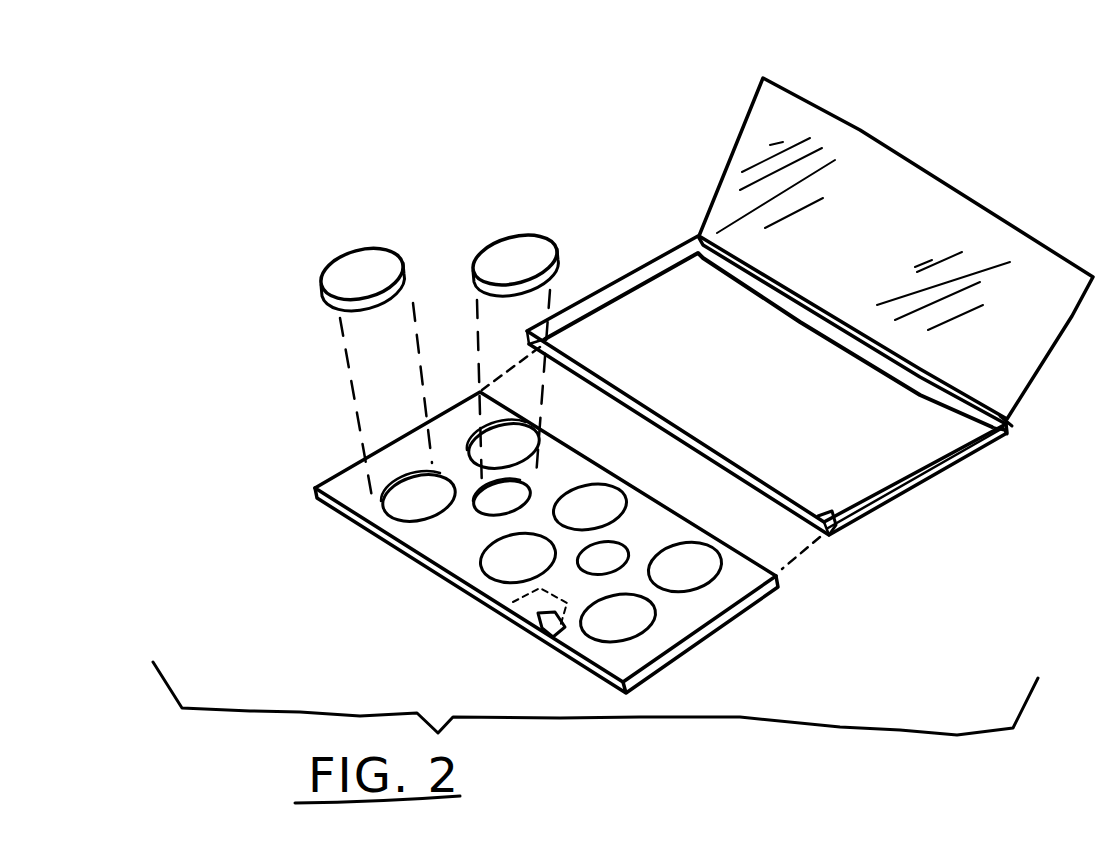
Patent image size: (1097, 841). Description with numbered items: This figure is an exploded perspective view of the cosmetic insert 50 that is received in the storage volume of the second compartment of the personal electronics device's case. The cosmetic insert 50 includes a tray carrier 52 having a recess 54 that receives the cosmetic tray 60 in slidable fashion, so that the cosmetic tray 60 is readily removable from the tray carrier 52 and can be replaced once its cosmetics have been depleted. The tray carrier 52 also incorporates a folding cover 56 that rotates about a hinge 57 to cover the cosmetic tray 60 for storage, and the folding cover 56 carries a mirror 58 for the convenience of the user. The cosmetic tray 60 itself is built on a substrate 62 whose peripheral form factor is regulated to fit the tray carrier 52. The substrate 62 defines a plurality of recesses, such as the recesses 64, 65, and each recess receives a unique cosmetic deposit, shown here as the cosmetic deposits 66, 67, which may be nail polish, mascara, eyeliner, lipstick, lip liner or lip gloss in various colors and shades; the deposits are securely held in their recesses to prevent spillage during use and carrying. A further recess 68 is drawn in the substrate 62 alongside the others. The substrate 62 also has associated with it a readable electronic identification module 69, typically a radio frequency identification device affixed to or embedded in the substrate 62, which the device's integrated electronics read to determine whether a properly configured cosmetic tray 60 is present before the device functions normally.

The cosmetic insert 50 is at (563, 98).
The tray carrier 52 is at (918, 488).
The recess 54 is at (824, 538).
The folding cover 56 is at (730, 148).
The hinge 57 is at (1010, 426).
The mirror 58 is at (898, 203).
The cosmetic tray 60 is at (332, 468).
The substrate 62 is at (707, 636).
The recess 64 is at (376, 508).
The recess 65 is at (470, 505).
The cosmetic deposit 66 is at (388, 250).
The cosmetic deposit 67 is at (495, 240).
The recess 68 is at (503, 560).
The readable electronic identification module 69 is at (548, 635).